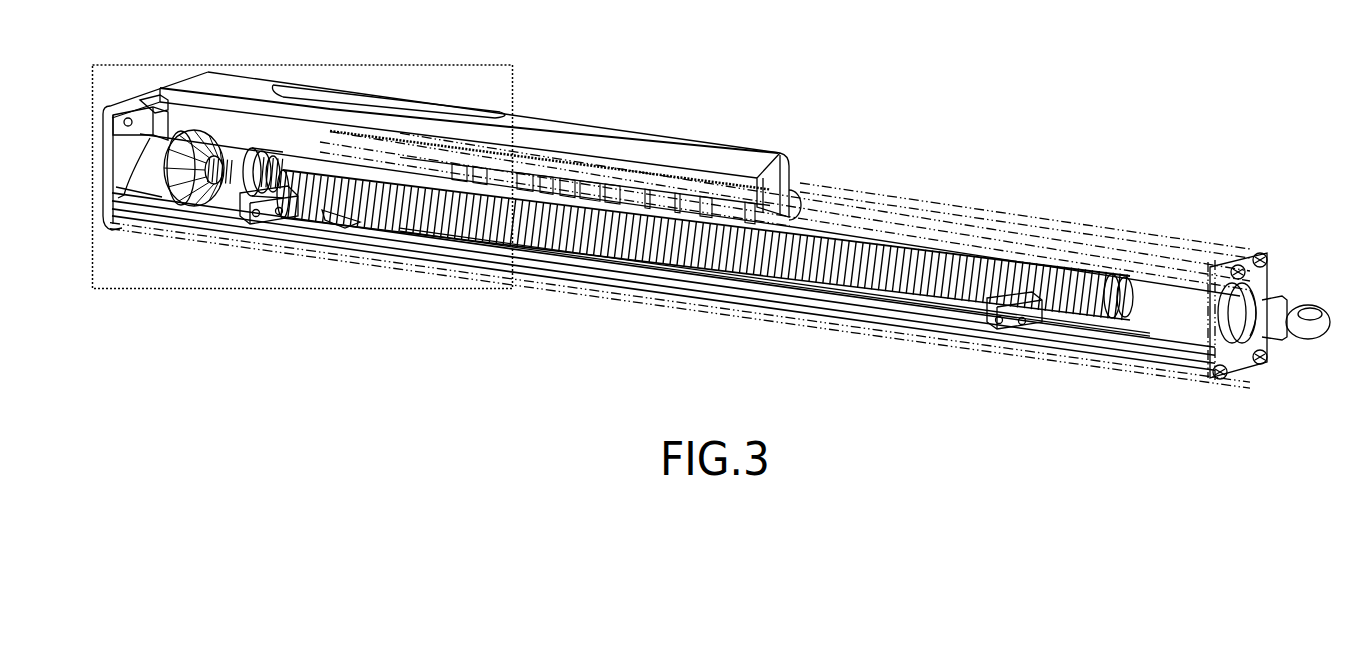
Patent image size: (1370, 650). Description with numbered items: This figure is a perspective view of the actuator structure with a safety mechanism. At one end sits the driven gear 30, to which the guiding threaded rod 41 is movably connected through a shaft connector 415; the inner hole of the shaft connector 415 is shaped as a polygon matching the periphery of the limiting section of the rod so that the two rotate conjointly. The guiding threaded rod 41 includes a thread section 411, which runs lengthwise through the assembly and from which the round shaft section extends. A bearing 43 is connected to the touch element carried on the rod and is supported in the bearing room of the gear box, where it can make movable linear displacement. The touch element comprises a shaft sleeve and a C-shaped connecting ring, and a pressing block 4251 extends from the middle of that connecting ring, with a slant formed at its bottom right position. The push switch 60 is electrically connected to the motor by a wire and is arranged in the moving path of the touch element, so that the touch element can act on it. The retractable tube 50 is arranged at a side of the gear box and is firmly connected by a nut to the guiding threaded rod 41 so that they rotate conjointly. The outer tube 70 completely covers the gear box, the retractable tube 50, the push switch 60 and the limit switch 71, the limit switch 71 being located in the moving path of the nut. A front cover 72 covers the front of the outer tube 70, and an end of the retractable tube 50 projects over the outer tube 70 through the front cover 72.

The driven gear 30 is at (151, 235).
The shaft connector 415 is at (163, 235).
The bearing 43 is at (200, 192).
The pressing block 4251 is at (233, 196).
The push switch 60 is at (270, 207).
The outer tube 70 is at (902, 200).
The guiding threaded rod 41 is at (550, 235).
The thread section 411 is at (482, 225).
The retractable tube 50 is at (670, 256).
The limit switch 71 is at (988, 306).
The front cover 72 is at (1262, 277).